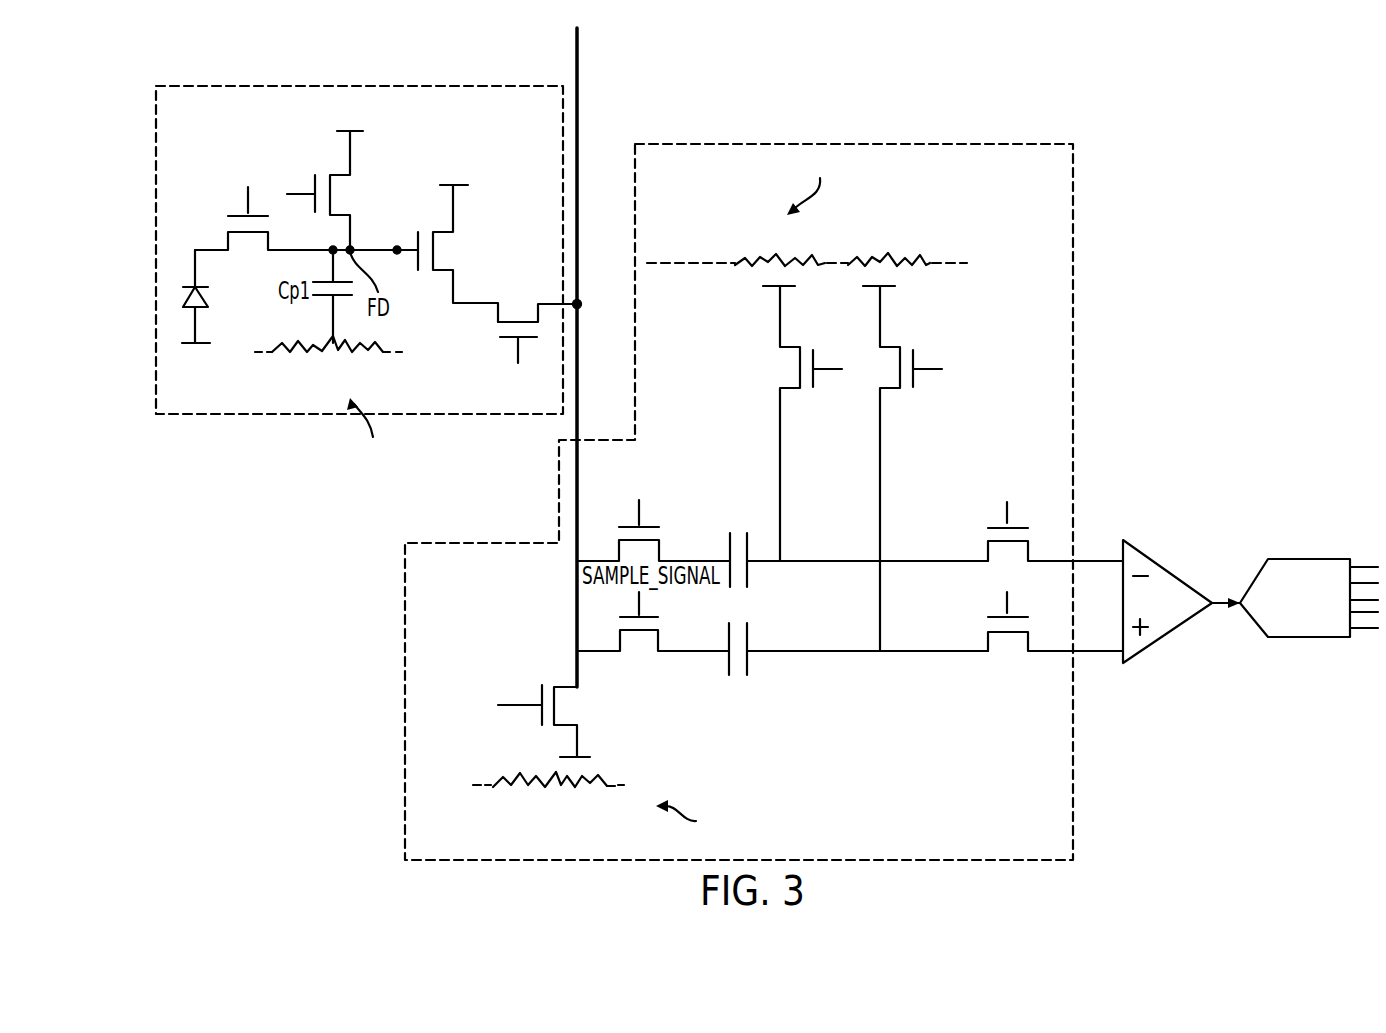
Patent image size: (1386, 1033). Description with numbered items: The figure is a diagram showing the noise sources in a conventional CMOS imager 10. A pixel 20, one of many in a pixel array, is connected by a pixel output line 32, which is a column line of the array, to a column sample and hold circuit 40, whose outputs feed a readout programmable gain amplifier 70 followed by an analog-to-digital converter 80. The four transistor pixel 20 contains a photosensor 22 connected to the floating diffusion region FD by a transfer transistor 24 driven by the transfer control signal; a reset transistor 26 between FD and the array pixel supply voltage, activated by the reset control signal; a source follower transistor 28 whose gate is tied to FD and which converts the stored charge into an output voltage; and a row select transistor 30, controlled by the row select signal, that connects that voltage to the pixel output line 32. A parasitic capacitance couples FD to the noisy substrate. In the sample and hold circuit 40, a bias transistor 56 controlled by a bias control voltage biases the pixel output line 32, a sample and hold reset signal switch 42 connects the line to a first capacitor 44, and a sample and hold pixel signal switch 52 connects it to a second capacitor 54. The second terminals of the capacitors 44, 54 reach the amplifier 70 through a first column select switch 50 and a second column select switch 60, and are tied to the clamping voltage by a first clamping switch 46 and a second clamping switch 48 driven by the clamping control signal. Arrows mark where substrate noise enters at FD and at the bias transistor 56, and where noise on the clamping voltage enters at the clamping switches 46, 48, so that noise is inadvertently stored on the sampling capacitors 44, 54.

The CMOS imager 10 is at (846, 114).
The pixel 20 is at (285, 414).
The photosensor 22 is at (183, 299).
The transfer transistor 24 is at (228, 232).
The reset transistor 26 is at (330, 213).
The source follower transistor 28 is at (453, 232).
The row select transistor 30 is at (498, 323).
The pixel output line 32 is at (578, 101).
The column sample and hold circuit 40 is at (1075, 202).
The sample and hold reset signal switch 42 is at (660, 541).
The first capacitor 44 is at (731, 533).
The first clamping switch 46 is at (800, 390).
The second clamping switch 48 is at (900, 390).
The first column select switch 50 is at (987, 541).
The sample and hold pixel signal switch 52 is at (660, 652).
The second capacitor 54 is at (748, 672).
The bias transistor 56 is at (577, 725).
The second column select switch 60 is at (988, 652).
The readout programmable gain amplifier 70 is at (1135, 660).
The analog-to-digital converter 80 is at (1280, 637).